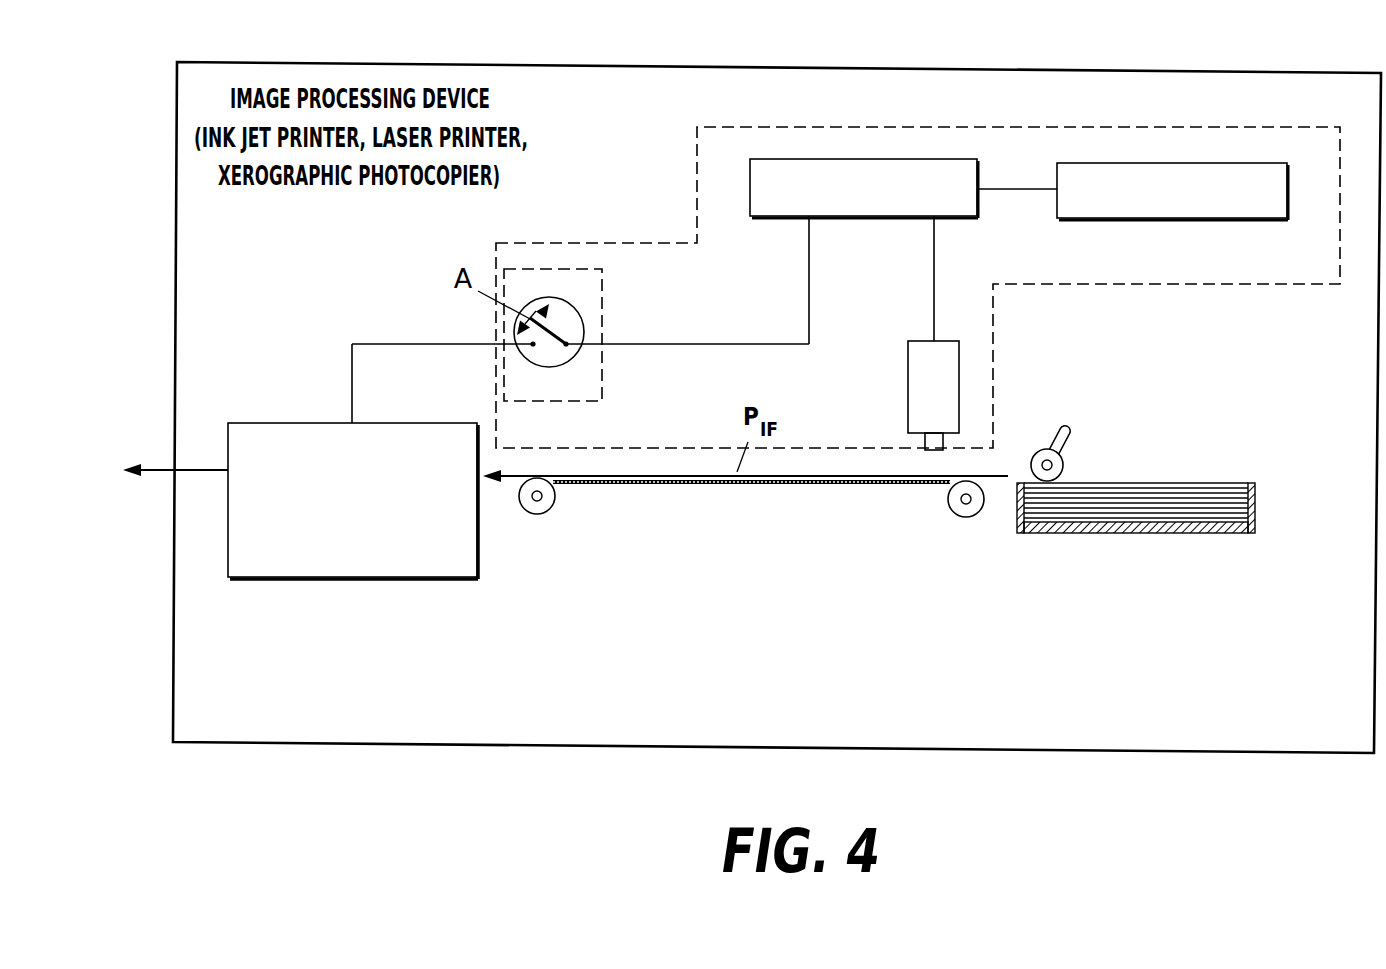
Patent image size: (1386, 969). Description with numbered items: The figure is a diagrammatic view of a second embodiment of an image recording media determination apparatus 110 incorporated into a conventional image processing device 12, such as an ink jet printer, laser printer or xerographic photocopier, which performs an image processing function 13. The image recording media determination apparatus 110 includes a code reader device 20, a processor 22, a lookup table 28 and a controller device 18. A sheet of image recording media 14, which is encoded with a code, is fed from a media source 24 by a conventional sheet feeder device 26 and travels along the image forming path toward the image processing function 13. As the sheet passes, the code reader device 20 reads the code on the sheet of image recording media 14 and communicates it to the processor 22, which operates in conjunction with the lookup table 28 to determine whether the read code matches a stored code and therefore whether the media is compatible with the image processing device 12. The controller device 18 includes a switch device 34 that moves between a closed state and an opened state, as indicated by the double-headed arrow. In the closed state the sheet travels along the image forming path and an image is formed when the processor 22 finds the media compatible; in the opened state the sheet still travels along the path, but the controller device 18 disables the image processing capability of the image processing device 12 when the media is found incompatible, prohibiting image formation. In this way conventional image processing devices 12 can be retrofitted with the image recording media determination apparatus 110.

The image processing device 12 is at (571, 63).
The image processing function 13 is at (260, 430).
The sheet of image recording media 14 is at (1172, 485).
The controller device 18 is at (603, 292).
The code reader device 20 is at (918, 346).
The processor 22 is at (963, 210).
The media source 24 is at (1157, 530).
The sheet feeder device 26 is at (1070, 432).
The lookup table 28 is at (1097, 212).
The switch device 34 is at (572, 358).
The image recording media determination apparatus 110 is at (1153, 287).